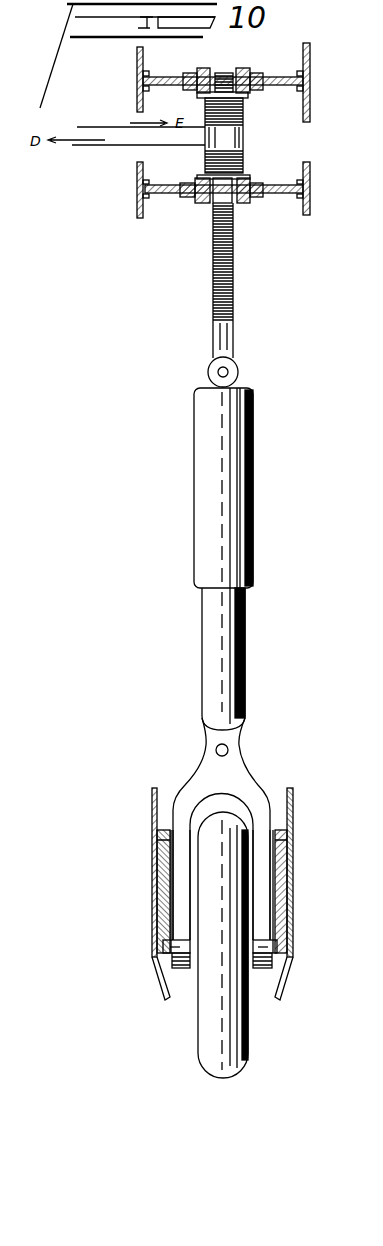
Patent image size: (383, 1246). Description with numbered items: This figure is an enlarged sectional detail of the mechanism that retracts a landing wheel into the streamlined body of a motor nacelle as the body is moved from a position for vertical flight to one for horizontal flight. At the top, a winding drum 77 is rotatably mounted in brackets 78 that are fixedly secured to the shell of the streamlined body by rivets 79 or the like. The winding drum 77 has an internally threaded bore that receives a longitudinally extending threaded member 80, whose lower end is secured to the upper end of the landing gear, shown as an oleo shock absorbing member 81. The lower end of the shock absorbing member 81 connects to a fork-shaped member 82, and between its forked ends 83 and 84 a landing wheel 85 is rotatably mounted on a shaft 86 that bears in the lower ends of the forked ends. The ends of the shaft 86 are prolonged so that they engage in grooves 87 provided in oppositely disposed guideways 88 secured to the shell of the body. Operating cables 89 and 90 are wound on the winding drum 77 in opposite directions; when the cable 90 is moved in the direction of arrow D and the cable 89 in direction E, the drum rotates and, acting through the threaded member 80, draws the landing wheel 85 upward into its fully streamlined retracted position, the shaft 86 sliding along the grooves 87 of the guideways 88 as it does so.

The winding drum 77 is at (243, 115).
The brackets 78 is at (265, 78).
The rivets 79 is at (147, 90).
The threaded member 80 is at (233, 280).
The oleo shock absorbing member 81 is at (253, 497).
The fork-shaped member 82 is at (250, 790).
The forked end 83 is at (180, 872).
The forked end 84 is at (265, 863).
The landing wheel 85 is at (233, 1040).
The shaft 86 is at (195, 965).
The grooves 87 is at (172, 917).
The guideways 88 is at (152, 890).
The operating cable 89 is at (108, 127).
The operating cable 90 is at (88, 147).